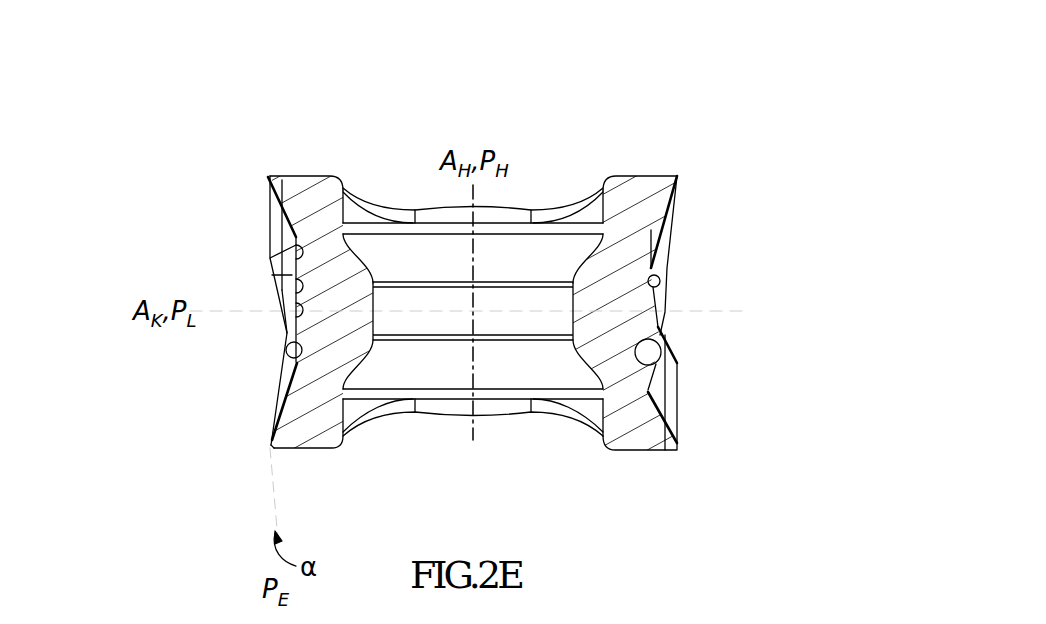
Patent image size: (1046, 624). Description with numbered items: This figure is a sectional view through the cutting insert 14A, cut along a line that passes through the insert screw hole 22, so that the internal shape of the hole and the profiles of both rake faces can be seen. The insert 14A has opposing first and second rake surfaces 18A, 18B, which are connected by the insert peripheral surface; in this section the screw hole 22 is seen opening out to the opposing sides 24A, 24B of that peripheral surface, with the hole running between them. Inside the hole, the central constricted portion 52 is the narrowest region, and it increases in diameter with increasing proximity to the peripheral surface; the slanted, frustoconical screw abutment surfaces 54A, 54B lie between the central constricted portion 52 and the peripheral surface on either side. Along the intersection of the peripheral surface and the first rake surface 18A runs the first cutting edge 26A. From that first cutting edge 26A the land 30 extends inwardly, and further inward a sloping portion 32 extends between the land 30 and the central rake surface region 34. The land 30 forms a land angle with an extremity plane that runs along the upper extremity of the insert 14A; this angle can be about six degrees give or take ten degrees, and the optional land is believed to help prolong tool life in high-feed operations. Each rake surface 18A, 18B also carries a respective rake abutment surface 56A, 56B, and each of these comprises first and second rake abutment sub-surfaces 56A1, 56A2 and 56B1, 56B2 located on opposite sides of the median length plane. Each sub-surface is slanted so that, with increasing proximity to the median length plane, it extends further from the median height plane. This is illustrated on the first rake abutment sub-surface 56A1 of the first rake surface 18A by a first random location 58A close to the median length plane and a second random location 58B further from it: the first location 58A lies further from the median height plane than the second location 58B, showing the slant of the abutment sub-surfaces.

The insert 14A is at (652, 92).
The first rake surface 18A is at (256, 188).
The second rake surface 18B is at (685, 203).
The insert screw hole 22 is at (537, 186).
The first opposing side of the insert peripheral surface 24A is at (517, 166).
The second opposing side of the insert peripheral surface 24B is at (460, 455).
The first cutting edge 26A is at (269, 172).
The land 30 is at (268, 180).
The sloping portion 32 is at (268, 202).
The central rake surface region 34 is at (278, 237).
The central constricted portion 52 is at (384, 297).
The first screw abutment surface 54A is at (364, 257).
The second screw abutment surface 54B is at (360, 382).
The first rake abutment surface 56A is at (255, 393).
The first rake abutment sub-surface of the first rake surface 56A1 is at (292, 290).
The second rake abutment sub-surface of the first rake surface 56A2 is at (290, 362).
The second rake abutment surface 56B is at (671, 263).
The first rake abutment sub-surface of the second rake surface 56B1 is at (660, 279).
The second rake abutment sub-surface of the second rake surface 56B2 is at (656, 372).
The first random location 58A is at (288, 341).
The second random location 58B is at (292, 262).